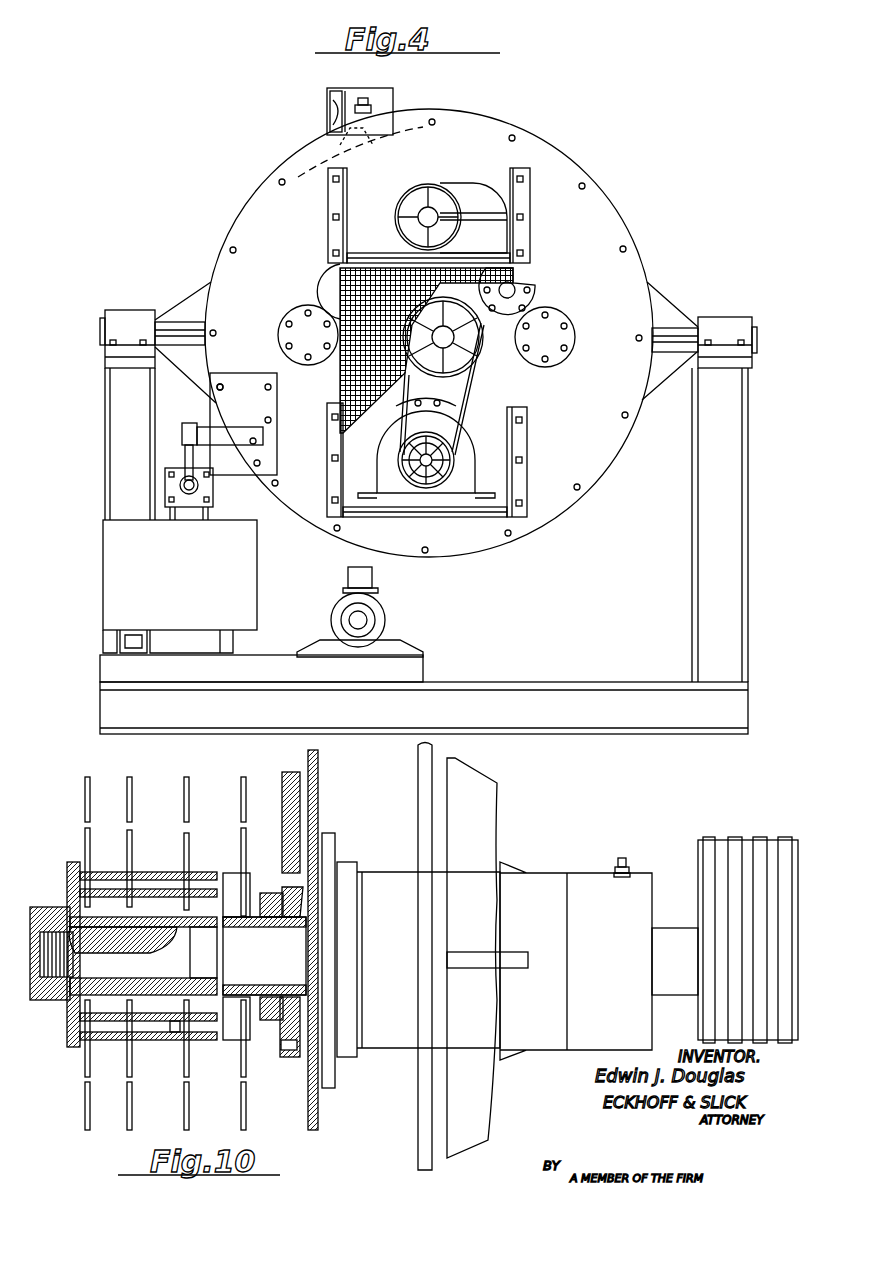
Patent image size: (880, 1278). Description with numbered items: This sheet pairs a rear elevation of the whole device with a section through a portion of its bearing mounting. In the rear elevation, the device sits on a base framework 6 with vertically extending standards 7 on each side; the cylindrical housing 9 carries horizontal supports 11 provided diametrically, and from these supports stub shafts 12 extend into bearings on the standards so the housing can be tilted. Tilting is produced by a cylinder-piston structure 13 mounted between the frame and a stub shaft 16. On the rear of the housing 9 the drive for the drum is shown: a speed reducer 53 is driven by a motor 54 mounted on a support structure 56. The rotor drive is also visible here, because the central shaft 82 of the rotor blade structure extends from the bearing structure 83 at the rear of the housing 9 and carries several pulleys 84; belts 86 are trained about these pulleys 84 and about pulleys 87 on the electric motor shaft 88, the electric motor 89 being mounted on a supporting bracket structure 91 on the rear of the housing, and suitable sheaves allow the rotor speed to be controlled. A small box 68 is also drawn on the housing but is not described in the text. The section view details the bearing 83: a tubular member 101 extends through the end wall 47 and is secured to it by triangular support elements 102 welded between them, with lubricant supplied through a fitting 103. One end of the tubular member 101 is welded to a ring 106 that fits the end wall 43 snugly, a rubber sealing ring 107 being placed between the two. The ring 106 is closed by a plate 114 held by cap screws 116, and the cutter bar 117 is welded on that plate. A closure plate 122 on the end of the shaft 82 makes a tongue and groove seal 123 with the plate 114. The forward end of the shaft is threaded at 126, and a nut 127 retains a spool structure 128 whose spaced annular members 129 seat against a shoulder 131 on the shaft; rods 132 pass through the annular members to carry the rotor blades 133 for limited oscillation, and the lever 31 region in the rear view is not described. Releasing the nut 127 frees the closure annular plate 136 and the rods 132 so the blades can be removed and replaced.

In FIG. 4, the base framework 6 is at (540, 682).
In FIG. 4, the vertically extending standards 7 is at (105, 468).
In FIG. 4, the cylindrical housing 9 is at (630, 220).
In FIG. 4, the horizontal supports 11 is at (190, 292).
In FIG. 4, the stub shafts 12 is at (757, 338).
In FIG. 4, the cylinder-piston structure 13 is at (216, 492).
In FIG. 4, the stub shaft 16 is at (194, 425).
In FIG. 4, the lever shaft 31 is at (185, 455).
In FIG. 4, the speed reducer 53 is at (478, 183).
In FIG. 4, the motor 54 is at (424, 185).
In FIG. 4, the support structure 56 is at (532, 233).
In FIG. 4, the switch box 68 is at (327, 110).
In FIG. 4, the pulleys 84 is at (480, 340).
In FIG. 10, the pulleys 84 is at (698, 1018).
In FIG. 4, the belts 86 is at (476, 384).
In FIG. 10, the belts 86 is at (762, 838).
In FIG. 4, the pulleys 87 is at (462, 462).
In FIG. 4, the electric motor shaft 88 is at (440, 447).
In FIG. 4, the electric motor 89 is at (472, 472).
In FIG. 4, the supporting bracket structure 91 is at (528, 497).
In FIG. 10, the end wall 43 is at (320, 776).
In FIG. 10, the end wall 47 is at (418, 768).
In FIG. 10, the central shaft 82 is at (678, 930).
In FIG. 10, the bearing structure 83 is at (656, 875).
In FIG. 10, the tubular member 101 is at (547, 873).
In FIG. 10, the triangular support elements 102 is at (490, 785).
In FIG. 10, the fitting 103 is at (628, 858).
In FIG. 10, the ring 106 is at (352, 862).
In FIG. 10, the rubber sealing ring 107 is at (330, 833).
In FIG. 10, the plate 114 is at (282, 1025).
In FIG. 10, the cap screws 116 is at (282, 1052).
In FIG. 10, the cutter bar 117 is at (282, 773).
In FIG. 10, the closure plate 122 is at (266, 893).
In FIG. 10, the tongue and groove seal 123 is at (292, 927).
In FIG. 10, the threaded end 126 is at (50, 1000).
In FIG. 10, the nut 127 is at (54, 907).
In FIG. 10, the spool structure 128 is at (112, 1041).
In FIG. 10, the spaced annular members 129 is at (135, 1045).
In FIG. 10, the shoulder 131 is at (175, 1041).
In FIG. 10, the rods 132 is at (106, 872).
In FIG. 10, the rotor blades 133 is at (131, 790).
In FIG. 10, the closure annular plate 136 is at (70, 866).